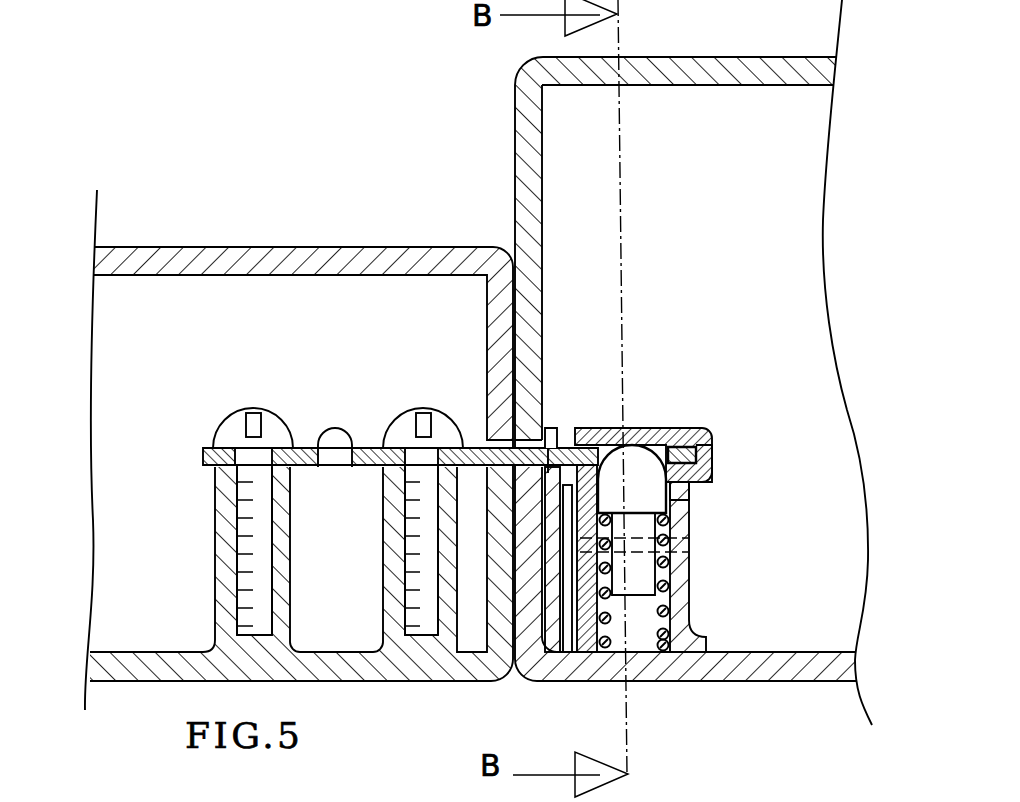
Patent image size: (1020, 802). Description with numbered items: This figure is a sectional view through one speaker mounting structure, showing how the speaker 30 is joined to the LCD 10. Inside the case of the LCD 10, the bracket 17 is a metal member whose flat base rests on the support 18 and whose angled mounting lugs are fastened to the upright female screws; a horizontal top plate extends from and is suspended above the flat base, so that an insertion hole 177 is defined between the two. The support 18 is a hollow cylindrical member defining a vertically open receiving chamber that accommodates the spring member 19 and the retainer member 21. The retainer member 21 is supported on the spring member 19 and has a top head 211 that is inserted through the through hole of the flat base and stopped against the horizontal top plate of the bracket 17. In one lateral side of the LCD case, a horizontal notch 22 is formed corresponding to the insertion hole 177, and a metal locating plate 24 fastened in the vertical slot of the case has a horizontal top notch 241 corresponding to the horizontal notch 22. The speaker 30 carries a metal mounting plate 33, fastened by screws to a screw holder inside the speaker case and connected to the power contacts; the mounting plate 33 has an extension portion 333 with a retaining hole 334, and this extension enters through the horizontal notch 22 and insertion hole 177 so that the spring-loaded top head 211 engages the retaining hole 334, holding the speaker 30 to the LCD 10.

The LCD 10 is at (493, 110).
The speaker 30 is at (263, 223).
The metal mounting plate 33 is at (474, 443).
The horizontal top notch 241 is at (554, 428).
The insertion hole 177 is at (600, 445).
The bracket 17 is at (650, 428).
The extension portion 333 is at (712, 445).
The retaining hole 334 is at (652, 487).
The top head 211 is at (688, 483).
The support 18 is at (685, 524).
The retainer member 21 is at (690, 596).
The spring member 19 is at (690, 636).
The horizontal notch 22 is at (522, 470).
The metal locating plate 24 is at (571, 600).